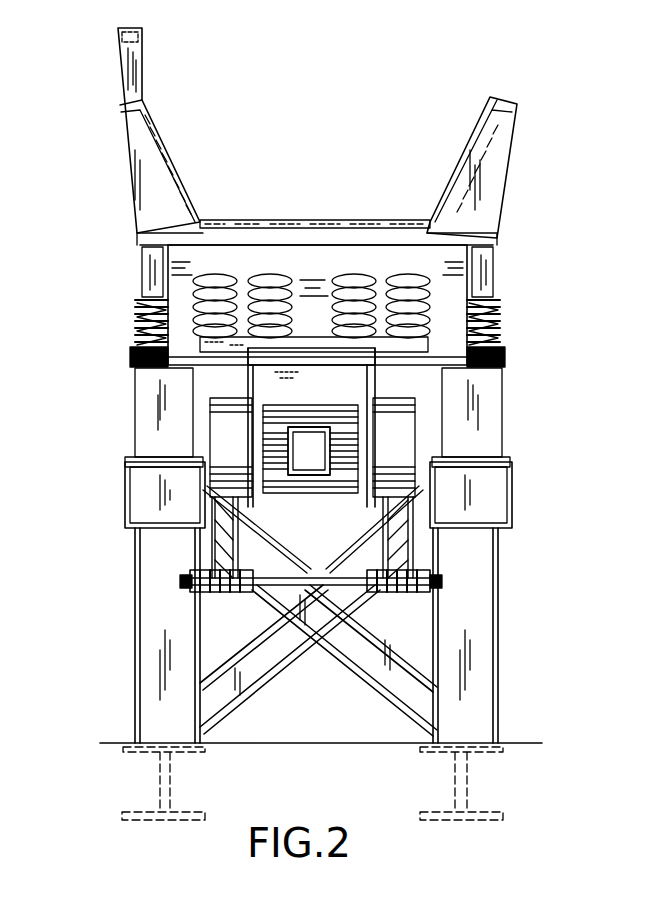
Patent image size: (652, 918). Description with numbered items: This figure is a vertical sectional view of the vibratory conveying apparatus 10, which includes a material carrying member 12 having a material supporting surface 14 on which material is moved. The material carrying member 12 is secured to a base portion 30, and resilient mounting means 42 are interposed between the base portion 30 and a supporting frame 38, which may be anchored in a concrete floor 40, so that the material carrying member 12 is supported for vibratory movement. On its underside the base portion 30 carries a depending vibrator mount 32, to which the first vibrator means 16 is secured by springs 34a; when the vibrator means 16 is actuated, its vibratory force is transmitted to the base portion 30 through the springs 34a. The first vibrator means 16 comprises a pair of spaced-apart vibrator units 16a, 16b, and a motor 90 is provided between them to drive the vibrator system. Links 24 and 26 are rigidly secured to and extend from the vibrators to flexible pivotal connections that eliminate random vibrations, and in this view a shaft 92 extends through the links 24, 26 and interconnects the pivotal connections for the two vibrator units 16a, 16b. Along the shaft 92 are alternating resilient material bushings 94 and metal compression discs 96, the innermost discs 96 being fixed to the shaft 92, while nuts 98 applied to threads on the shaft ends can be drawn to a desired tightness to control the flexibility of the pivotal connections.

The vibratory conveying apparatus 10 is at (346, 88).
The material carrying member 12 is at (452, 132).
The material supporting surface 14 is at (325, 222).
The first vibrator means 16 is at (412, 392).
The vibrator unit 16a is at (395, 438).
The vibrator unit 16b is at (220, 443).
The link 24 is at (210, 540).
The link 26 is at (377, 520).
The base portion 30 is at (493, 262).
The vibrator mount 32 is at (303, 268).
The spring 34a is at (262, 273).
The supporting frame 38 is at (515, 660).
The concrete floor 40 is at (522, 743).
The resilient mounting means 42 is at (140, 322).
The motor 90 is at (322, 400).
The shaft 92 is at (332, 556).
The resilient material bushing 94 is at (353, 593).
The metal compression disc 96 is at (222, 590).
The nut 98 is at (190, 588).